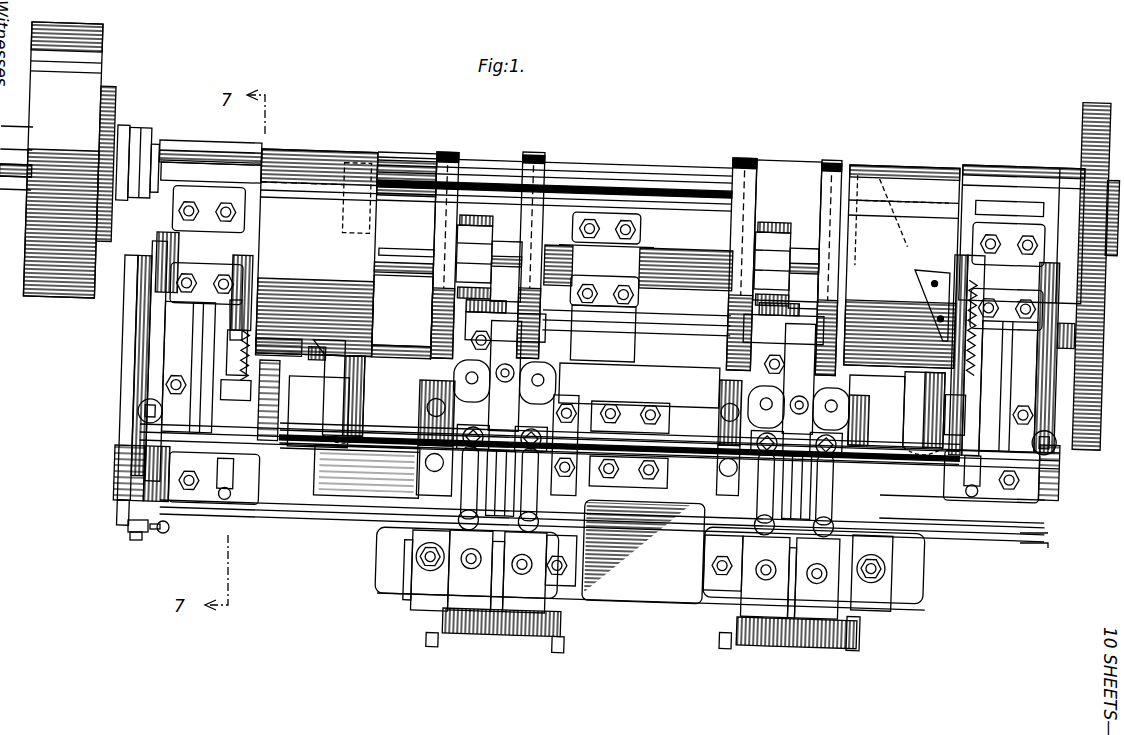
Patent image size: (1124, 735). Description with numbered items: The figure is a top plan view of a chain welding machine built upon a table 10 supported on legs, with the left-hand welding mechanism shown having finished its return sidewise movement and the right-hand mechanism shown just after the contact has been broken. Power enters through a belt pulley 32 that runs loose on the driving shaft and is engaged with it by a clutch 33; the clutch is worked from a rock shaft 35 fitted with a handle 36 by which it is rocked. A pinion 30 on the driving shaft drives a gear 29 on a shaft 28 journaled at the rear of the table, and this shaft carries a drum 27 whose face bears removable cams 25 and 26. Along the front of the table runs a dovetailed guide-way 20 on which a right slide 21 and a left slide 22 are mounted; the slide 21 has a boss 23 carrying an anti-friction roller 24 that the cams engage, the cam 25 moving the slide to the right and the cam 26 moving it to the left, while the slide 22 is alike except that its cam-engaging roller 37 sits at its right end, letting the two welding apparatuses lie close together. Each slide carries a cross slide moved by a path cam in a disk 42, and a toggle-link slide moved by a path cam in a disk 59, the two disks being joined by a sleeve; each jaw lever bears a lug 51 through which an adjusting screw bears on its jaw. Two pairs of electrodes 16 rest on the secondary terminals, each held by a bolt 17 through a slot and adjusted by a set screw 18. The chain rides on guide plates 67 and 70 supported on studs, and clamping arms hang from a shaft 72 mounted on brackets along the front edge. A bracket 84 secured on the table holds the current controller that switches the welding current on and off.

The belt pulley 32 is at (103, 64).
The clutch 33 is at (134, 118).
The drum 27 is at (296, 150).
The cam 26 is at (390, 153).
The disk 42 is at (456, 150).
The disk 59 is at (536, 152).
The lug 51 is at (615, 162).
The shaft 28 is at (675, 252).
The pinion 30 is at (1083, 162).
The gear 29 is at (1085, 133).
The rock shaft 35 is at (130, 353).
The cam 25 is at (918, 283).
The bracket 84 is at (178, 448).
The handle 36 is at (168, 532).
The plate 70 is at (268, 520).
The plate 67 is at (1032, 548).
The left slide 22 is at (940, 508).
The dovetailed guide-way 20 is at (701, 470).
The anti-friction roller 24 is at (368, 370).
The boss 23 is at (338, 396).
The shaft 72 is at (310, 440).
The right slide 21 is at (356, 492).
The cam-engaging roller 37 is at (897, 392).
The electrode 16 is at (413, 605).
The bolt 17 is at (555, 570).
The set screw 18 is at (497, 633).
The table 10 is at (856, 608).